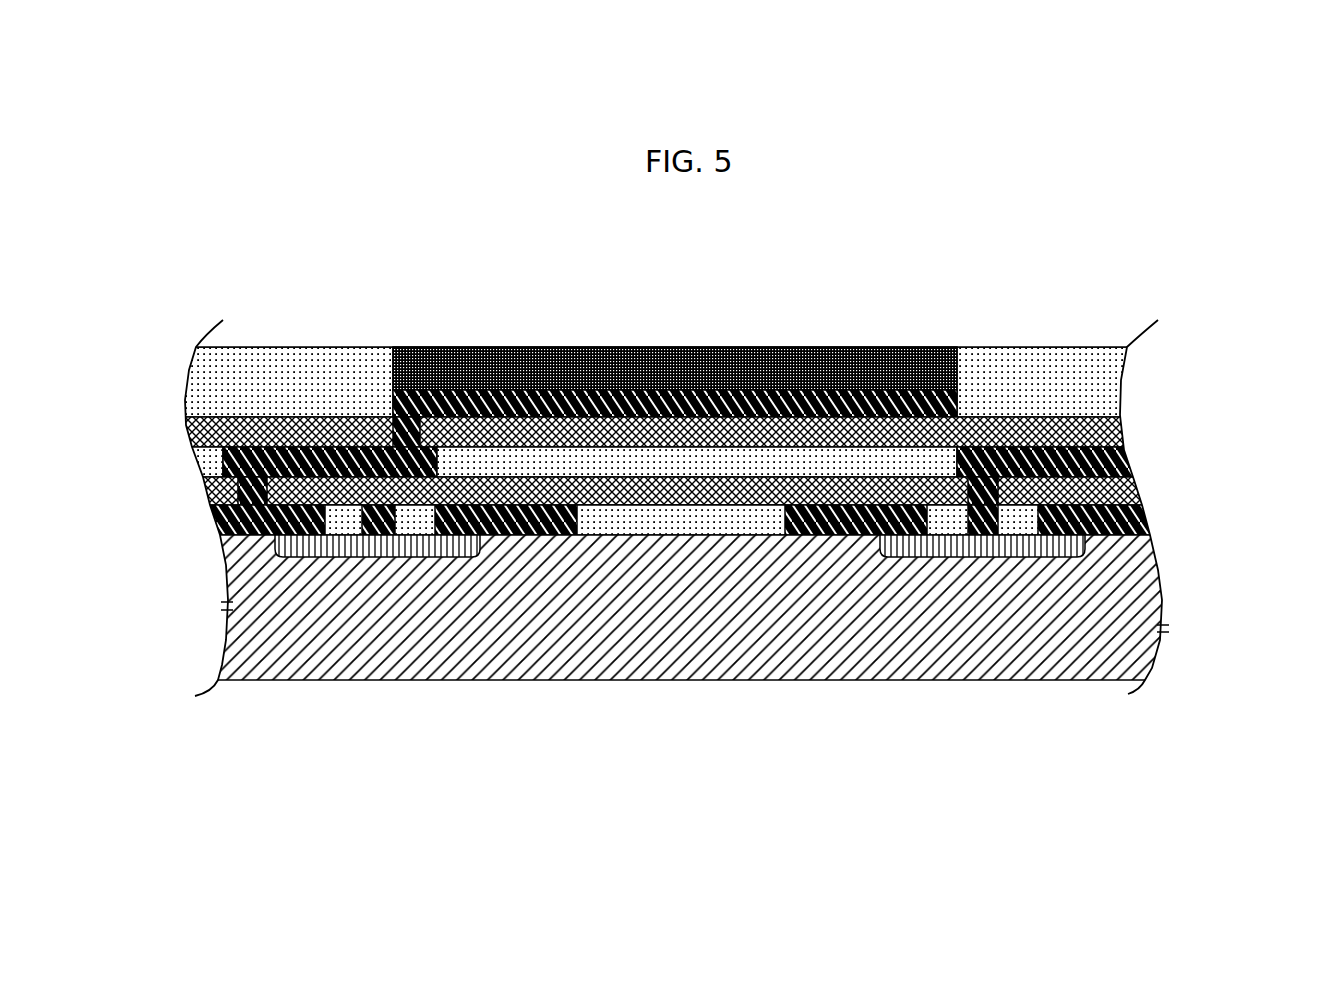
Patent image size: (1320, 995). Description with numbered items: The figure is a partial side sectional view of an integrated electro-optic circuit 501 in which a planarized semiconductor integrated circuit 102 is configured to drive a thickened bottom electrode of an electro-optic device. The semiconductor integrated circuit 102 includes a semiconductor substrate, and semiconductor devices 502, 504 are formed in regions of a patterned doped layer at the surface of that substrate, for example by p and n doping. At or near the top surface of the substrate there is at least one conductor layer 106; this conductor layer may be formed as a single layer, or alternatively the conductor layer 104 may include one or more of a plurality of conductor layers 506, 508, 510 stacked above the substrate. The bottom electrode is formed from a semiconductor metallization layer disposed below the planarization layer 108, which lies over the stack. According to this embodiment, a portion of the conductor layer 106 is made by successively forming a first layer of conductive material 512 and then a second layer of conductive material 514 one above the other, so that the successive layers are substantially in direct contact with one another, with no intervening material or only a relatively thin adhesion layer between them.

The semiconductor integrated circuit 102 is at (709, 607).
The conductor layer 104 is at (244, 548).
The conductor layer 106 is at (722, 467).
The planarization layer 108 is at (281, 346).
The integrated electro-optic circuit 501 is at (722, 443).
The semiconductor device 502 is at (381, 559).
The semiconductor device 504 is at (990, 559).
The conductor layer 506 is at (720, 351).
The conductor layer 508 is at (213, 463).
The conductor layer 510 is at (209, 529).
The first layer of conductive material 512 is at (391, 404).
The second layer of conductive material 514 is at (452, 347).